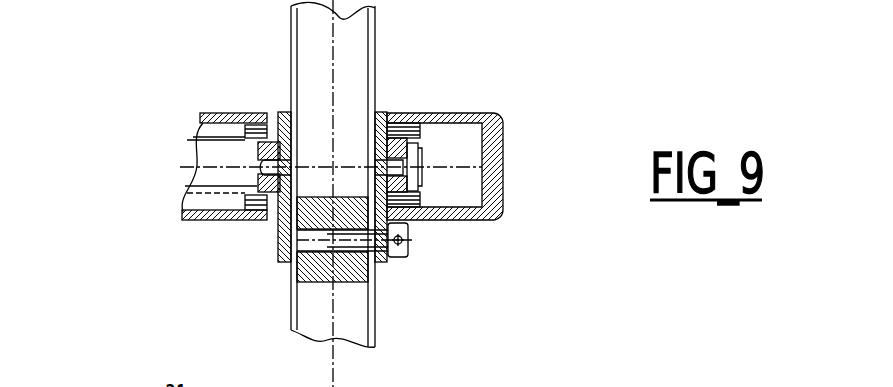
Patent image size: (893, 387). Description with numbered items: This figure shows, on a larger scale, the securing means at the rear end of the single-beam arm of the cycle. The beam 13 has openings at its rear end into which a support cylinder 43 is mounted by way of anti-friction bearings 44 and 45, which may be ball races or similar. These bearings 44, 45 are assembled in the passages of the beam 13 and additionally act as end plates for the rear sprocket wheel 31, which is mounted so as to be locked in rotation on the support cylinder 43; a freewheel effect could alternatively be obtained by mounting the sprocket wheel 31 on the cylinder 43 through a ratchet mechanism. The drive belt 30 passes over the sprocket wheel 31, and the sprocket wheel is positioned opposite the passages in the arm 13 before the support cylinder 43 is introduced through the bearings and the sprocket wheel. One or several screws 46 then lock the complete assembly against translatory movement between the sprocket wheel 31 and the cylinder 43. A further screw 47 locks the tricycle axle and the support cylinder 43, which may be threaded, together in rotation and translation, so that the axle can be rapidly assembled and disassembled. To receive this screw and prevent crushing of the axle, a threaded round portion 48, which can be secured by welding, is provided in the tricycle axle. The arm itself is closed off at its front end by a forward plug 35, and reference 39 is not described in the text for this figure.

The single-beam arm 13 is at (215, 118).
The drive belt 30 is at (195, 162).
The rear sprocket wheel 31 is at (400, 150).
The forward plug 35 is at (507, 134).
The vertical tube / post 39 is at (352, 197).
The support cylinder 43 is at (278, 113).
The anti-friction bearing 44 is at (397, 113).
The anti-friction bearing 45 is at (267, 208).
The screw 46 is at (401, 169).
The screw 47 is at (407, 261).
The threaded round portion 48 is at (315, 268).